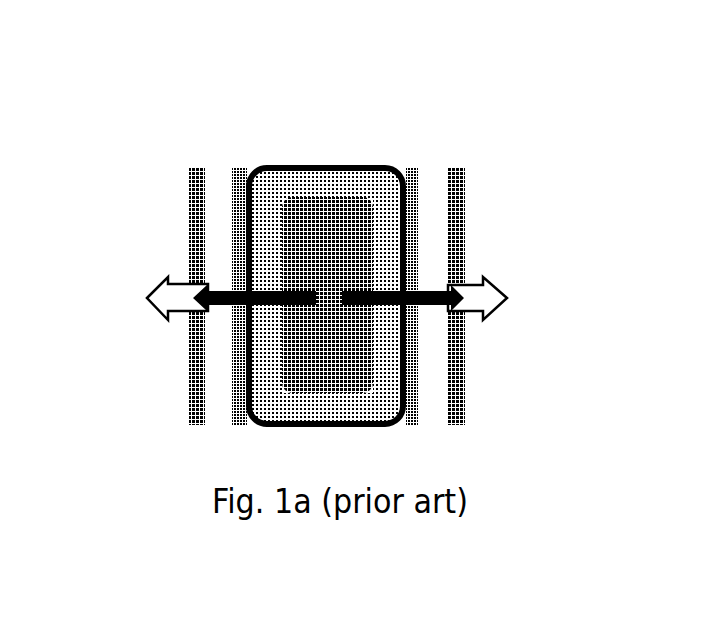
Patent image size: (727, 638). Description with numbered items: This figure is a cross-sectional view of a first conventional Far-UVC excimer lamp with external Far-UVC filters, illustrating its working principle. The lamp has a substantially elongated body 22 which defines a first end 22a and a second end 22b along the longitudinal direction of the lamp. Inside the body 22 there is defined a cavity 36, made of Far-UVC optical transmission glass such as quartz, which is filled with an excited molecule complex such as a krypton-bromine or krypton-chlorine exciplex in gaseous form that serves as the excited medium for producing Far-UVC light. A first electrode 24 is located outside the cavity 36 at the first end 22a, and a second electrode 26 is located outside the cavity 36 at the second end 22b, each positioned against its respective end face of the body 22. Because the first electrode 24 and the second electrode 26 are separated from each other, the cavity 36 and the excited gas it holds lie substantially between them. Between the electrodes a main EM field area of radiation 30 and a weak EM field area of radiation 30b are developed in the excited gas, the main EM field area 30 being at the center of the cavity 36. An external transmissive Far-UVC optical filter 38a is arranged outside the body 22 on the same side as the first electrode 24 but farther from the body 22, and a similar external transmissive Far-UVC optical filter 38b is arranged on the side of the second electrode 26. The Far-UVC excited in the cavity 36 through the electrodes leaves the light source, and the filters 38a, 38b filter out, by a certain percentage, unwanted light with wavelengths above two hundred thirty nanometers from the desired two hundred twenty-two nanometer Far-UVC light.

The body 22 is at (343, 166).
The first end 22a is at (232, 247).
The second end 22b is at (416, 257).
The first electrode 24 is at (242, 264).
The second electrode 26 is at (410, 355).
The main EM field area of radiation 30 is at (332, 253).
The weak EM field area of radiation 30b is at (379, 195).
The cavity 36 is at (310, 185).
The external transmissive Far-UVC optical filter 38a is at (195, 353).
The external transmissive Far-UVC optical filter 38b is at (449, 325).